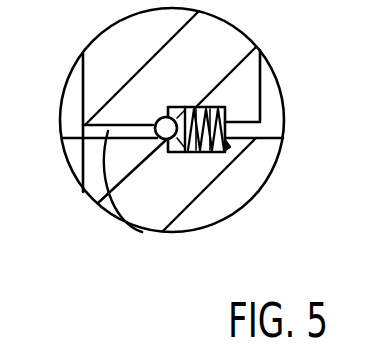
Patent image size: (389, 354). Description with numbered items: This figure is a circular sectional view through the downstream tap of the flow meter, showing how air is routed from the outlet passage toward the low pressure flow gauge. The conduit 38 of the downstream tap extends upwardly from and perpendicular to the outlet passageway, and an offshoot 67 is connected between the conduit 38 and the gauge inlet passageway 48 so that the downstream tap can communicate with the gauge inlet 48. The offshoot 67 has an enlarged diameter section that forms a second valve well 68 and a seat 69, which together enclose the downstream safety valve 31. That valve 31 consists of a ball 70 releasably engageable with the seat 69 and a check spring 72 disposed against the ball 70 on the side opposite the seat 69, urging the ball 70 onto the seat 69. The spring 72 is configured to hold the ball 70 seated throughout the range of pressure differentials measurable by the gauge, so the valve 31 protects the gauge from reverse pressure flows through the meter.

The downstream safety valve 31 is at (229, 147).
The conduit 38 is at (73, 150).
The gauge inlet passageway 48 is at (278, 112).
The offshoot 67 is at (112, 190).
The second valve well 68 is at (172, 150).
The seat 69 is at (153, 116).
The ball 70 is at (172, 103).
The check spring 72 is at (192, 152).